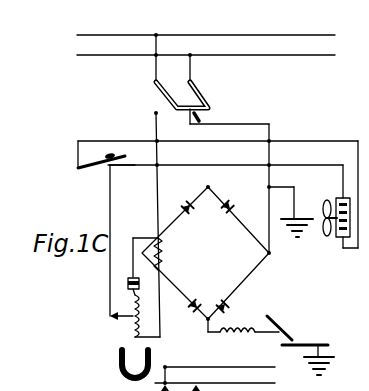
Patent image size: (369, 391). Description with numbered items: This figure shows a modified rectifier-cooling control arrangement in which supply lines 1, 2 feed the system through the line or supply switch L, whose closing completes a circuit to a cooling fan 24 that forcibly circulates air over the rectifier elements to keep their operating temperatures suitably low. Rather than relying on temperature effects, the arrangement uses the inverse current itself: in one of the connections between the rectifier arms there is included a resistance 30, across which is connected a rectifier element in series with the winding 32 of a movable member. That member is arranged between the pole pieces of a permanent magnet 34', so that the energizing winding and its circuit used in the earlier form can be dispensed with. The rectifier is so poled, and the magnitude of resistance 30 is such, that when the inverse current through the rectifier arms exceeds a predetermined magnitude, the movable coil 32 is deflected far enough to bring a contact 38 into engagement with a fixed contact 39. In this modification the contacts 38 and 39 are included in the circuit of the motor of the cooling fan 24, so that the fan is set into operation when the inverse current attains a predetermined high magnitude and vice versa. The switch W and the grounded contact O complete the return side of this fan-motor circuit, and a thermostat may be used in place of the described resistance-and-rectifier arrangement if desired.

The first supply conductor 1 is at (243, 34).
The second supply conductor 2 is at (238, 54).
The supply switch L is at (206, 96).
The contact 38 is at (96, 170).
The fixed contact 39 is at (122, 167).
The resistance 30 is at (205, 253).
The cooling fan 24 is at (341, 241).
The winding 32 is at (130, 327).
The permanent magnet 34' is at (107, 370).
The switch W is at (276, 322).
The grounded contact bar O is at (312, 341).